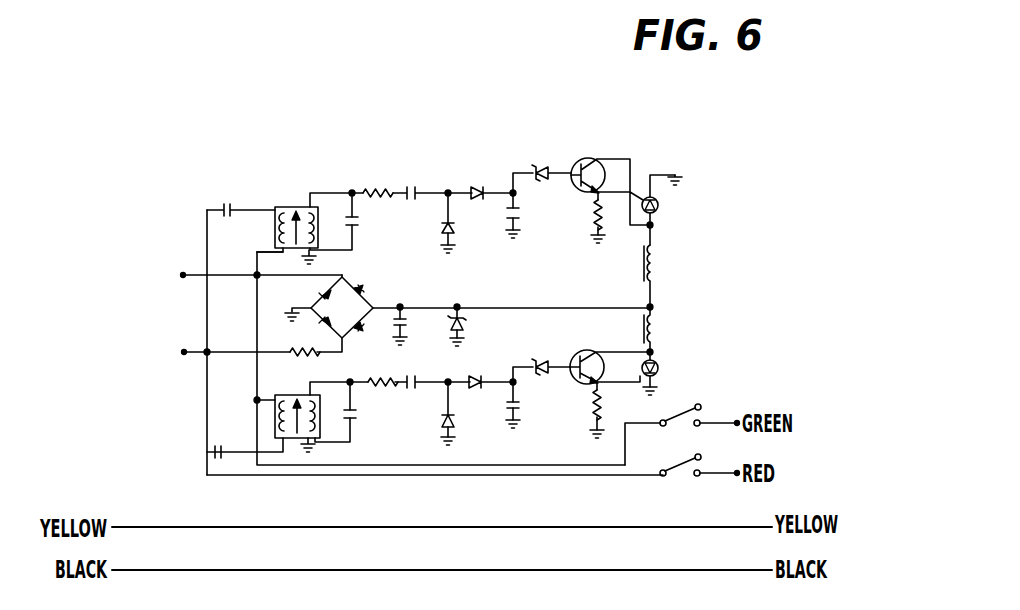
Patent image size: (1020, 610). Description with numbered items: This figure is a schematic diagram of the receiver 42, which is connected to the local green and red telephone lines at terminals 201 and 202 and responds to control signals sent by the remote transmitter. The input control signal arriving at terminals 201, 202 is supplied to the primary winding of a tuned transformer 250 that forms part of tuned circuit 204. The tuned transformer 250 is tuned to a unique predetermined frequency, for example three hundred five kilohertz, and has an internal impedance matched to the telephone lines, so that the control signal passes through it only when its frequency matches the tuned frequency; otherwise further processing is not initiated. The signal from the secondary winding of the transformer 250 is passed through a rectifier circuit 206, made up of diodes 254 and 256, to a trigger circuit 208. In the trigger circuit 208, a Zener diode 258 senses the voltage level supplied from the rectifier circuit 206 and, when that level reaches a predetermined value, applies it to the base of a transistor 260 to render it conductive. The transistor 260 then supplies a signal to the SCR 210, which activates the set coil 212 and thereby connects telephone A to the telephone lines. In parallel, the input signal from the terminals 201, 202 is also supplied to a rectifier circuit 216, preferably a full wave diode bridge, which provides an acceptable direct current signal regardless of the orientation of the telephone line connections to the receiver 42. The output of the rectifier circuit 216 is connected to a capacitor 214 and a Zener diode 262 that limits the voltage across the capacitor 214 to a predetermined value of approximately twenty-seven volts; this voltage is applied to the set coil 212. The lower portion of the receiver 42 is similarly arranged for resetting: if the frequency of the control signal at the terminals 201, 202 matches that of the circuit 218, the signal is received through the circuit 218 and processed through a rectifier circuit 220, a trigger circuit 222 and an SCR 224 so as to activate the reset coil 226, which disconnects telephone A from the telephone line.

The receiver 42 is at (193, 167).
The terminal 201 is at (185, 262).
The terminal 202 is at (183, 363).
The tuned circuit 204 is at (305, 174).
The tuned transformer 250 is at (285, 263).
The diode 254 is at (436, 238).
The diode 256 is at (483, 181).
The rectifier circuit 206 is at (472, 246).
The trigger circuit 208 is at (559, 210).
The Zener diode 258 is at (539, 152).
The transistor 260 is at (593, 144).
The SCR 210 is at (663, 206).
The set coil 212 is at (673, 269).
The rectifier circuit 216 is at (356, 332).
The capacitor 214 is at (418, 322).
The Zener diode 262 is at (470, 327).
The circuit 218 is at (367, 441).
The rectifier circuit 220 is at (475, 440).
The trigger circuit 222 is at (573, 396).
The SCR 224 is at (661, 374).
The reset coil 226 is at (692, 338).